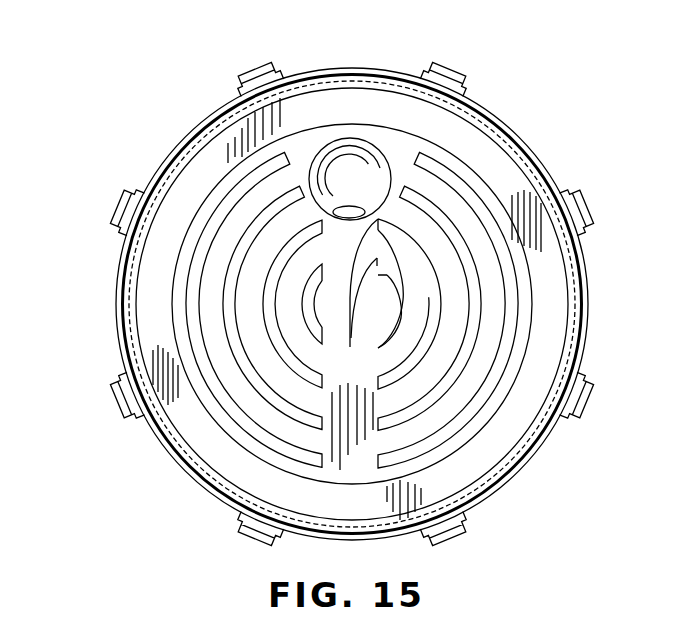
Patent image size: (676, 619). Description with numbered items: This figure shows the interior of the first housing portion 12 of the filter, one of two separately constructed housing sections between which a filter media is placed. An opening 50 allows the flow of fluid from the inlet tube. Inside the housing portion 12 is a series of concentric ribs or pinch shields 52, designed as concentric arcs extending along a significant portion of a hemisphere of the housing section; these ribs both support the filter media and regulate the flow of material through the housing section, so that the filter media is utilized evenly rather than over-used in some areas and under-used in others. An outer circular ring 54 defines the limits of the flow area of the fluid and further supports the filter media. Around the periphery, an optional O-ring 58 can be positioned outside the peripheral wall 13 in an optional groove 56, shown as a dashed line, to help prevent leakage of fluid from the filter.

The first housing portion 12 is at (528, 142).
The peripheral wall 13 is at (300, 74).
The opening 50 is at (345, 138).
The concentric ribs or pinch shields 52 is at (472, 267).
The outer circular ring 54 is at (140, 262).
The groove 56 is at (393, 78).
The O-ring 58 is at (197, 128).